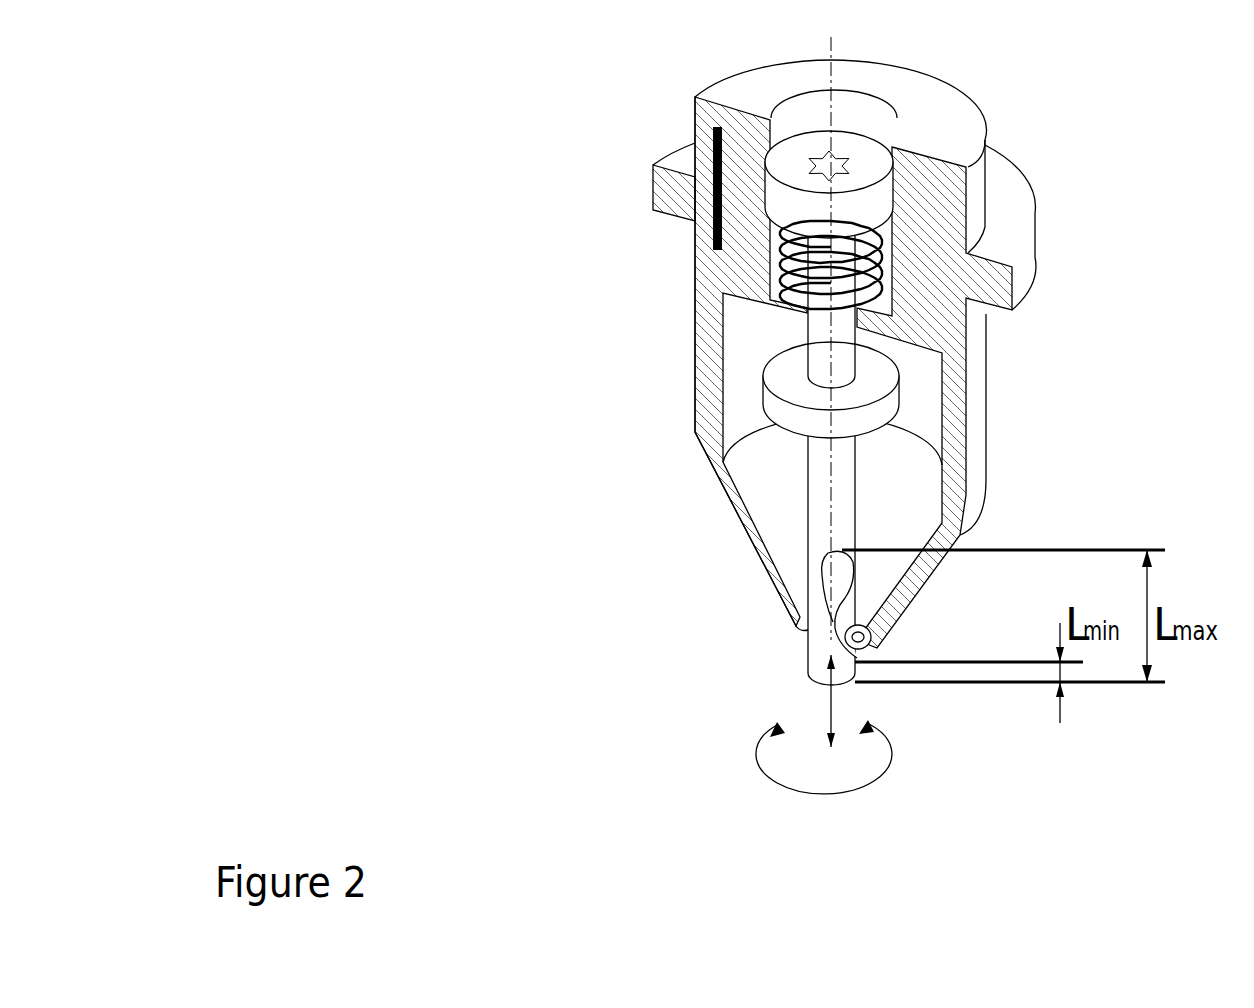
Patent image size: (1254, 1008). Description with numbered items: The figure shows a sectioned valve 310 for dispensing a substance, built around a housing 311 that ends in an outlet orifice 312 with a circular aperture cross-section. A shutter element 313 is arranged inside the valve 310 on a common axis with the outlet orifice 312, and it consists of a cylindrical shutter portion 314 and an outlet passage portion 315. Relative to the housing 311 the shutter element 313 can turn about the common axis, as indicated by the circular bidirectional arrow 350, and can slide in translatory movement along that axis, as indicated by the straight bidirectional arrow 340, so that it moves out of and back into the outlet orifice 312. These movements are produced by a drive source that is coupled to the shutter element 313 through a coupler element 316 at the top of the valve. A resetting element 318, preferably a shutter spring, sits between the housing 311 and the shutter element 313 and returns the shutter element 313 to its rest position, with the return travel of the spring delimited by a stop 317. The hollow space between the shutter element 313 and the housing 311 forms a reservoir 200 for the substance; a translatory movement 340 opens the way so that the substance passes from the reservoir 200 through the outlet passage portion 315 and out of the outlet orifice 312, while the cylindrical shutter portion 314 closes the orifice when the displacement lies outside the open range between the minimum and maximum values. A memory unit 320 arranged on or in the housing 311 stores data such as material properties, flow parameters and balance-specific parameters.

The valve 310 is at (869, 354).
The housing 311 is at (980, 382).
The outlet orifice 312 is at (845, 635).
The shutter element 313 is at (792, 463).
The cylindrical shutter portion 314 is at (807, 675).
The outlet passage portion 315 is at (842, 575).
The coupler element 316 is at (817, 158).
The stop 317 is at (775, 405).
The resetting element 318 is at (788, 272).
The memory unit 320 is at (708, 203).
The reservoir 200 is at (902, 502).
The straight bidirectional arrow 340 is at (828, 702).
The circular bidirectional arrow 350 is at (903, 753).